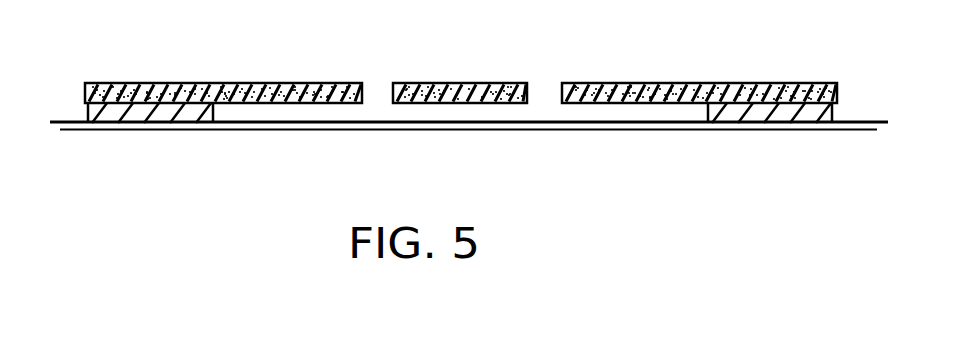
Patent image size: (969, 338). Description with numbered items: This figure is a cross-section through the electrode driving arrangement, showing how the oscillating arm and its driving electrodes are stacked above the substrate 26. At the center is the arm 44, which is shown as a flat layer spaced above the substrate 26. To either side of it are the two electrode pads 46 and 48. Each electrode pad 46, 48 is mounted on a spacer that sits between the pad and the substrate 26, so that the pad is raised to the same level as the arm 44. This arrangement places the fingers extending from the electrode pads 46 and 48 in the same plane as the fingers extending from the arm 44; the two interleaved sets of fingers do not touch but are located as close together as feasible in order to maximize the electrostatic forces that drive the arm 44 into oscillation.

The substrate 26 is at (583, 122).
The arm 44 is at (520, 80).
The electrode pad 46 is at (223, 98).
The electrode pad 48 is at (720, 96).